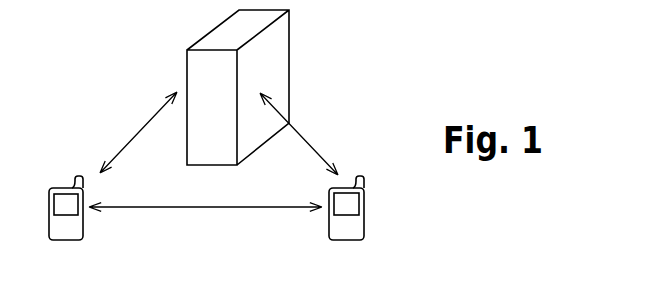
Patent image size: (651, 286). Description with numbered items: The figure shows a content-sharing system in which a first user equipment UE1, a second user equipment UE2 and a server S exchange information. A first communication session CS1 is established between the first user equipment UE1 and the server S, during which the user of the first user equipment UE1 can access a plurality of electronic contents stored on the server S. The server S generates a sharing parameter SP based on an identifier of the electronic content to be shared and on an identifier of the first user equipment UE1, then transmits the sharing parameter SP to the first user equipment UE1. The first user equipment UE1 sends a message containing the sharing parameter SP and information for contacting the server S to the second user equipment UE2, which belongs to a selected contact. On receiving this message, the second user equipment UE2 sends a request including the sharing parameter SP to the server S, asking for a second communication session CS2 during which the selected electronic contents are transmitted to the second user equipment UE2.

The server S is at (238, 87).
The first user equipment UE1 is at (71, 225).
The second user equipment UE2 is at (354, 226).
The first communication session CS1 is at (136, 132).
The second communication session CS2 is at (303, 134).
The sharing parameter SP is at (205, 194).